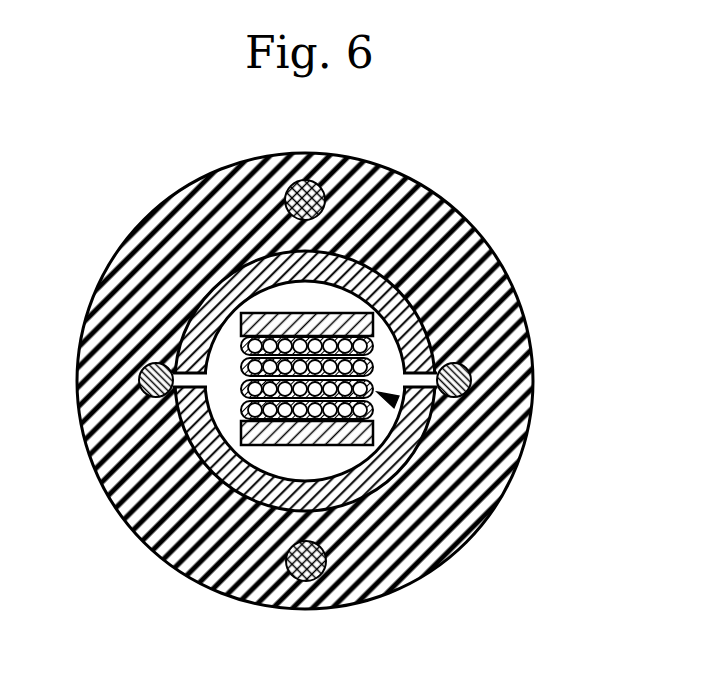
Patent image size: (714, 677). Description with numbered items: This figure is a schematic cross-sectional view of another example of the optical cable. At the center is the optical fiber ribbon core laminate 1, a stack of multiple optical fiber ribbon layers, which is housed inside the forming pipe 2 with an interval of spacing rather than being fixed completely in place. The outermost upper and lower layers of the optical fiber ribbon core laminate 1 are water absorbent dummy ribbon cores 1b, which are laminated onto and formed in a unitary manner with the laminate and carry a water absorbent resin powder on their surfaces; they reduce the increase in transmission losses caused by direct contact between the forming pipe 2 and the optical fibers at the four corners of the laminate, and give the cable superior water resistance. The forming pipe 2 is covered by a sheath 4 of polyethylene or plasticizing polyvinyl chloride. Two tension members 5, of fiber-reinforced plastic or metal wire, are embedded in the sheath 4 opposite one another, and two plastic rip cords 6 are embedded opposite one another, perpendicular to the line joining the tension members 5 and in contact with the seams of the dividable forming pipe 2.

The optical fiber ribbon core laminate 1 is at (300, 387).
The water absorbent dummy ribbon cores 1b is at (390, 370).
The forming pipe 2 is at (232, 407).
The sheath 4 is at (325, 378).
The tension members 5 is at (331, 375).
The rip cords 6 is at (349, 457).